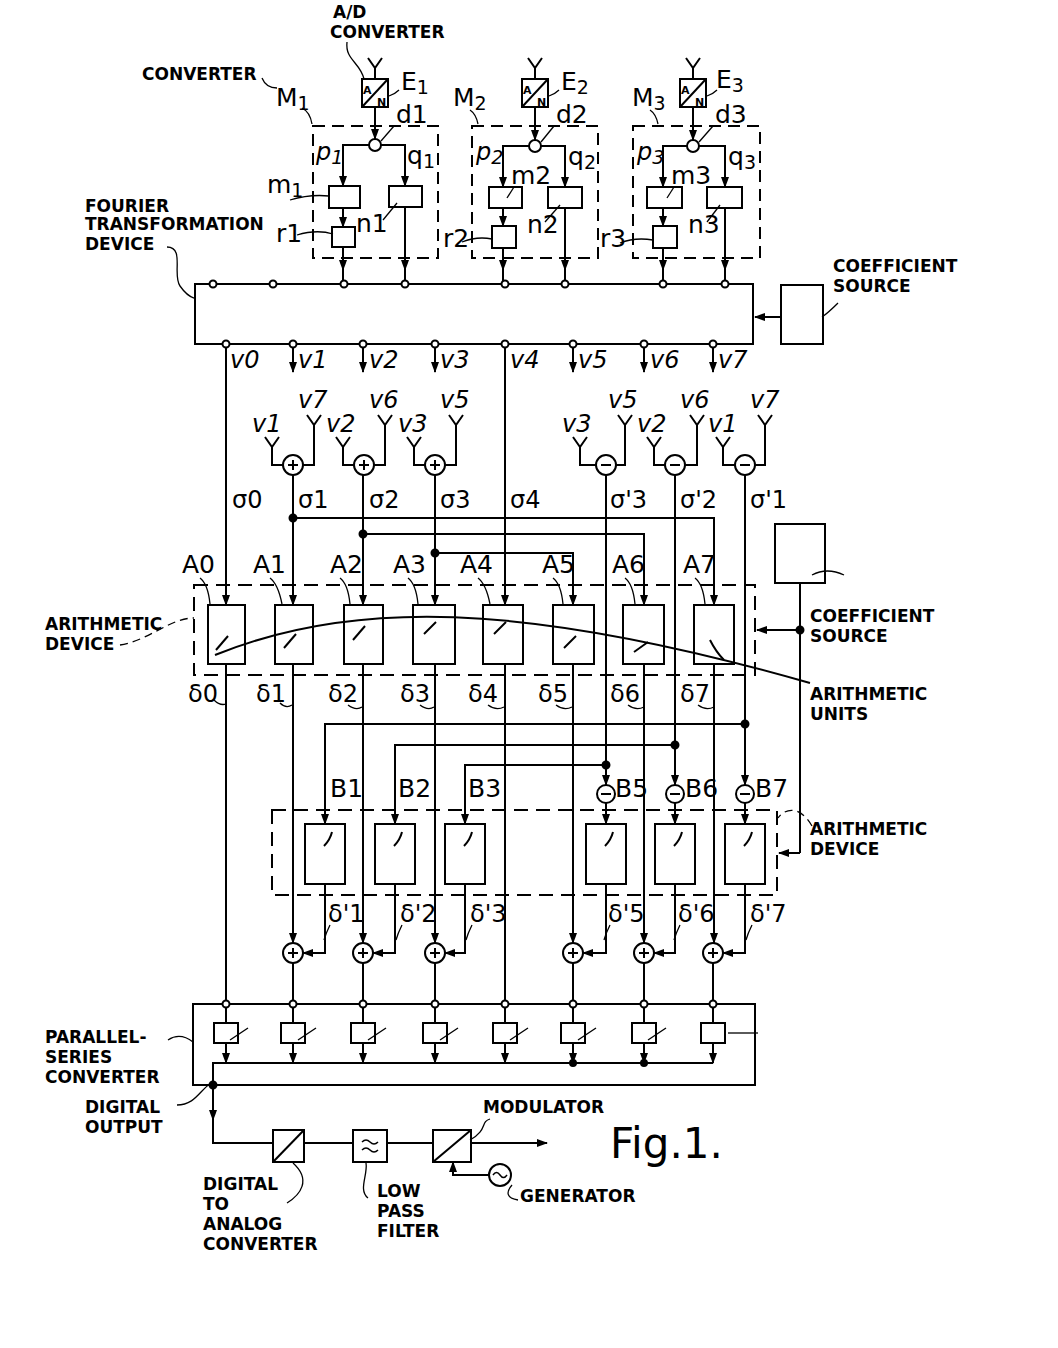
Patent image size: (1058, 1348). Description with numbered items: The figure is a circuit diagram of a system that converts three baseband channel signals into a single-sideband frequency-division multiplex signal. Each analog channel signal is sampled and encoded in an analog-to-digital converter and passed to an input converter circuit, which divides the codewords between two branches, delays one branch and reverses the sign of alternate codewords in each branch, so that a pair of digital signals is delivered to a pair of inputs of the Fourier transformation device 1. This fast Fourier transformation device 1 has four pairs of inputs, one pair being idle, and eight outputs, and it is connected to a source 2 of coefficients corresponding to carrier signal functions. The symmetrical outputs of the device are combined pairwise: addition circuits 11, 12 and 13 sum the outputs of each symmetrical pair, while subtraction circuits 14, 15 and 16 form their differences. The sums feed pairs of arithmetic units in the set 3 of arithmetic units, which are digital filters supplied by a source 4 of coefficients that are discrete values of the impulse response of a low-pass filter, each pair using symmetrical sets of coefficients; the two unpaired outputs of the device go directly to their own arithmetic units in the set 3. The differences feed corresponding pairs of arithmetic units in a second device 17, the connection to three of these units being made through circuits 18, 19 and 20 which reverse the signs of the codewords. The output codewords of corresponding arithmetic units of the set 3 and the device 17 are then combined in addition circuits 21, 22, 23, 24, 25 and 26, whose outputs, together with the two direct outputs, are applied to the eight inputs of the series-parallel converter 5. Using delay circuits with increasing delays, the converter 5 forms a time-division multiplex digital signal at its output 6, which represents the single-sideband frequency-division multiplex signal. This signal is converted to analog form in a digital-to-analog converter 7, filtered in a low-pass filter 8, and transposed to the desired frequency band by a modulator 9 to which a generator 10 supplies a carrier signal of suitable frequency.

The Fourier transformation device 1 is at (242, 284).
The source of coefficients 2 is at (801, 286).
The set of arithmetic units 3 is at (754, 640).
The source of coefficients 4 is at (796, 524).
The series-parallel converter 5 is at (204, 1007).
The output 6 is at (215, 1088).
The digital-to-analog converter 7 is at (290, 1130).
The low-pass filter 8 is at (378, 1130).
The modulator 9 is at (447, 1130).
The generator 10 is at (512, 1172).
The addition circuit 11 is at (284, 469).
The addition circuit 12 is at (356, 470).
The addition circuit 13 is at (427, 470).
The subtraction circuit 14 is at (755, 469).
The subtraction circuit 15 is at (666, 470).
The subtraction circuit 16 is at (597, 470).
The device 17 is at (778, 889).
The sign-reversing circuit 18 is at (609, 785).
The sign-reversing circuit 19 is at (677, 785).
The sign-reversing circuit 20 is at (748, 785).
The addition circuit 21 is at (286, 956).
The addition circuit 22 is at (357, 962).
The addition circuit 23 is at (428, 962).
The addition circuit 24 is at (562, 954).
The addition circuit 25 is at (638, 963).
The addition circuit 26 is at (724, 959).